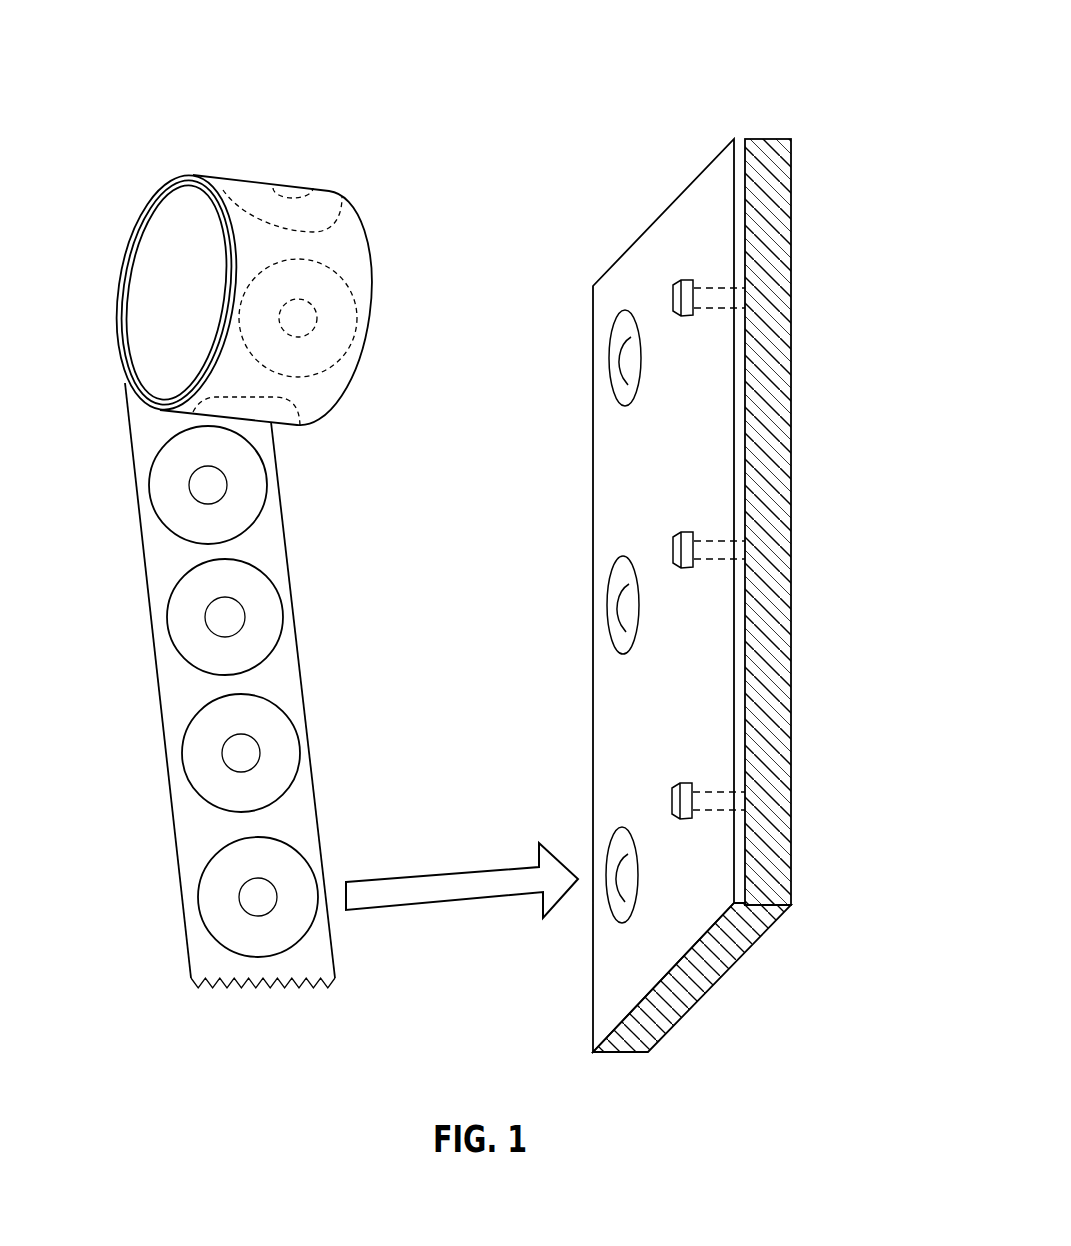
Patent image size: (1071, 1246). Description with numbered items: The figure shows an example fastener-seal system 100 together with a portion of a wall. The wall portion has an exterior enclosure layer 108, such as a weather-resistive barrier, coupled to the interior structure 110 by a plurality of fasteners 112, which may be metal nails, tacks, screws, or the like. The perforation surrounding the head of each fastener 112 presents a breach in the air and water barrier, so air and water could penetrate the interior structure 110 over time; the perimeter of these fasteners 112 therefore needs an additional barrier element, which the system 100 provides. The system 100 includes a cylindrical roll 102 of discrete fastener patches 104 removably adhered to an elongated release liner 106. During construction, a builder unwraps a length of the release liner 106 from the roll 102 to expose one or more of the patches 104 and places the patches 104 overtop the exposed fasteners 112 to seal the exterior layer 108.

The fastener-seal system 100 is at (166, 122).
The cylindrical roll 102 is at (370, 312).
The fastener patches 104 is at (178, 622).
The release liner 106 is at (292, 688).
The exterior enclosure layer 108 is at (607, 460).
The interior structure 110 is at (791, 415).
The fasteners 112 is at (725, 800).